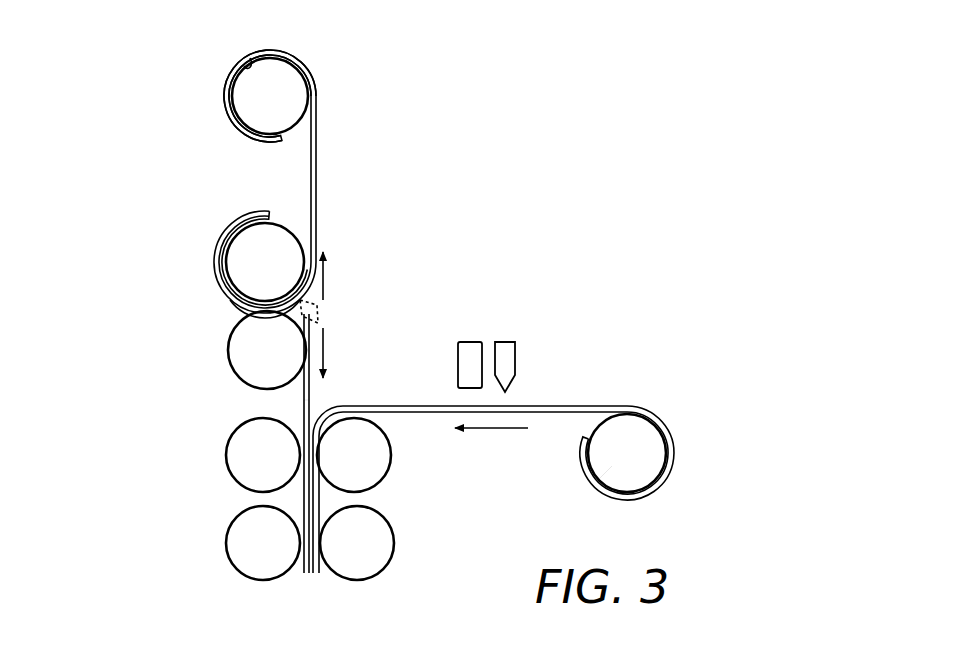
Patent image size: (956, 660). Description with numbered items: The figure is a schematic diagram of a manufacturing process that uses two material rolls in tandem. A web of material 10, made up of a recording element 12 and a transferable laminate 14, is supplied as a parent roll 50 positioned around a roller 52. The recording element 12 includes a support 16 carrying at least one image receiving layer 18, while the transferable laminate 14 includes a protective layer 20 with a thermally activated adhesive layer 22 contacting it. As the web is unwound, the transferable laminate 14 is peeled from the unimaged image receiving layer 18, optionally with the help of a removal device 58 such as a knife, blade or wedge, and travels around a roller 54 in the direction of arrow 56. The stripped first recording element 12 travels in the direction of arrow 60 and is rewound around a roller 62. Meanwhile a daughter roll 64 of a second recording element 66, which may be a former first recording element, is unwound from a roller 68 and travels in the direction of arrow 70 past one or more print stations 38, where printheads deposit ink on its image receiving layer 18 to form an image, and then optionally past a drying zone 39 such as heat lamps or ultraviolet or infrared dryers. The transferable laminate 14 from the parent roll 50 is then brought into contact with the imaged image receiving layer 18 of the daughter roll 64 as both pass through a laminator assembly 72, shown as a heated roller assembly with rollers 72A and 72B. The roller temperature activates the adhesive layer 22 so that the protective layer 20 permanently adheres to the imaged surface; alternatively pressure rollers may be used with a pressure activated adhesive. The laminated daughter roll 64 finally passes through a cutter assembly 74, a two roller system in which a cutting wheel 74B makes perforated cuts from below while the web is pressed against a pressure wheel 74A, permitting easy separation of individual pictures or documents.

The web of material 10 is at (222, 222).
The recording element 12 is at (212, 100).
The transferable laminate 14 is at (283, 402).
The support 16 is at (250, 64).
The image receiving layer 18 is at (322, 175).
The protective layer 20 is at (243, 308).
The thermally activated adhesive layer 22 is at (322, 398).
The print station 38 is at (507, 340).
The drying zone 39 is at (472, 340).
The parent roll 50 is at (202, 287).
The roller 52 is at (283, 236).
The roller 54 is at (240, 360).
The arrow 56 is at (323, 343).
The removal device 58 is at (318, 312).
The arrow 60 is at (325, 270).
The roller 62 is at (290, 72).
The daughter roll 64 is at (682, 470).
The second recording element 66 is at (672, 435).
The roller 68 is at (605, 470).
The arrow 70 is at (505, 430).
The laminator assembly 72 is at (155, 472).
The heated roller 72A is at (237, 483).
The heated roller 72B is at (385, 478).
The cutter assembly 74 is at (215, 560).
The pressure wheel 74A is at (250, 567).
The cutting wheel 74B is at (385, 573).